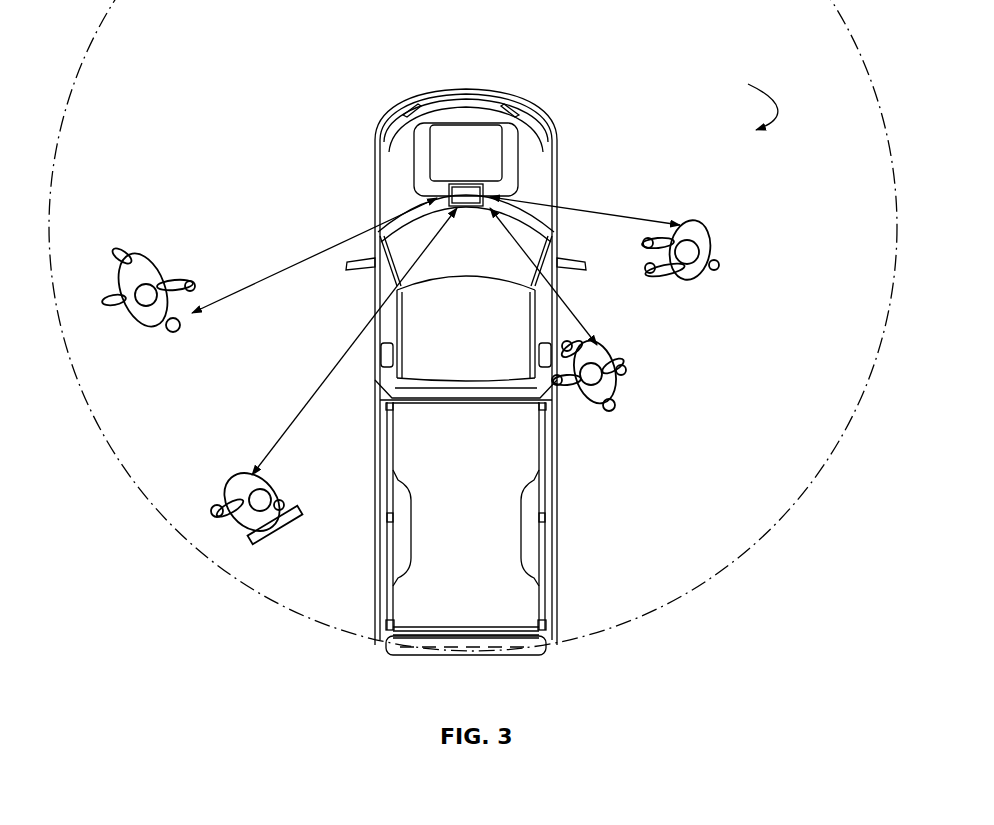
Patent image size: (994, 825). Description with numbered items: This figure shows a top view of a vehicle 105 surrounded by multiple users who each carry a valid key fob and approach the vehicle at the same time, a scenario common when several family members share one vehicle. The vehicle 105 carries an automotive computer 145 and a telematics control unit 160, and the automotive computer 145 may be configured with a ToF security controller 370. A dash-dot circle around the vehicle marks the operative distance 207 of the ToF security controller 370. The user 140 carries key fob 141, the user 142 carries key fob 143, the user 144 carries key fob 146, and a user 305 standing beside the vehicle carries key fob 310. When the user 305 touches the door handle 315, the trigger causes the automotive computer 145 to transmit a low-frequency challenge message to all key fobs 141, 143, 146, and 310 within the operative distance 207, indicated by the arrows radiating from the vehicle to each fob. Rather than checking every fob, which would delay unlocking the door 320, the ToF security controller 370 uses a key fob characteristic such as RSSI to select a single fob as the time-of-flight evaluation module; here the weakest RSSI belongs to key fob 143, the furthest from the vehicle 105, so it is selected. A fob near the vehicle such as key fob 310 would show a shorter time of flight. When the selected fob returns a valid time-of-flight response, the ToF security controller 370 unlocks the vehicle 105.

The vehicle 105 is at (491, 361).
The automotive computer 145 is at (481, 186).
The telematics control unit 160 is at (470, 183).
The operative distance 207 is at (60, 143).
The ToF security controller 370 is at (744, 100).
The user 140 is at (172, 299).
The key fob 141 is at (183, 330).
The user 142 is at (207, 479).
The key fob 143 is at (213, 513).
The user 144 is at (718, 263).
The key fob 146 is at (736, 229).
The user 305 is at (593, 407).
The key fob 310 is at (622, 392).
The door handle 315 is at (560, 342).
The door 320 is at (556, 282).